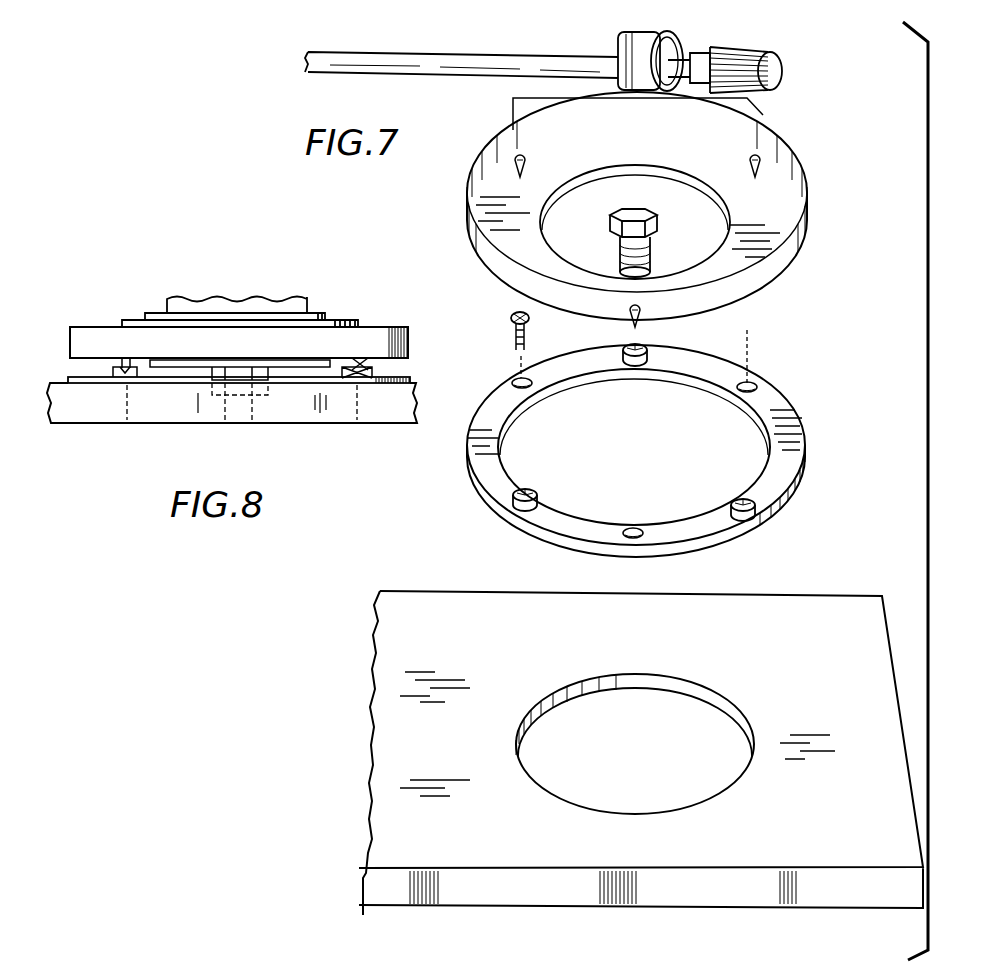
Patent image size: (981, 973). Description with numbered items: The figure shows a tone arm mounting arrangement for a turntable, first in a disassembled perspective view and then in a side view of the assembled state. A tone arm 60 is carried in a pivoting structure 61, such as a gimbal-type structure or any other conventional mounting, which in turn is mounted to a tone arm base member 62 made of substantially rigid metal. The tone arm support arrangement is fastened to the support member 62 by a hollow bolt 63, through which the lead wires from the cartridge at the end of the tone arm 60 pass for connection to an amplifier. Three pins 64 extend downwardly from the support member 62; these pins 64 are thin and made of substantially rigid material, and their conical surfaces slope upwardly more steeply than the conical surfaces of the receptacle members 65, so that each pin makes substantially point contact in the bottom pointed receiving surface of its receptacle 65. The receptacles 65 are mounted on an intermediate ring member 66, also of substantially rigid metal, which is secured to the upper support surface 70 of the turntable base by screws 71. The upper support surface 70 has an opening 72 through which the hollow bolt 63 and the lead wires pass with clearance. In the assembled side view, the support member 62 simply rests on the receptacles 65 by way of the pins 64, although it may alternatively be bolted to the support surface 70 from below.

In FIG. 7, the tone arm 60 is at (500, 36).
In FIG. 7, the pivoting structure 61 is at (720, 33).
In FIG. 7, the tone arm base member 62 is at (483, 157).
In FIG. 7, the hollow bolt 63 is at (618, 250).
In FIG. 8, the hollow bolt 63 is at (257, 408).
In FIG. 7, the pins 64 is at (528, 160).
In FIG. 8, the pins 64 is at (358, 363).
In FIG. 7, the receptacle members 65 is at (648, 348).
In FIG. 8, the receptacle members 65 is at (370, 375).
In FIG. 7, the intermediate ring member 66 is at (778, 410).
In FIG. 8, the intermediate ring member 66 is at (410, 380).
In FIG. 7, the upper support surface 70 is at (545, 580).
In FIG. 8, the upper support surface 70 is at (393, 422).
In FIG. 7, the screws 71 is at (530, 324).
In FIG. 7, the opening 72 is at (692, 693).